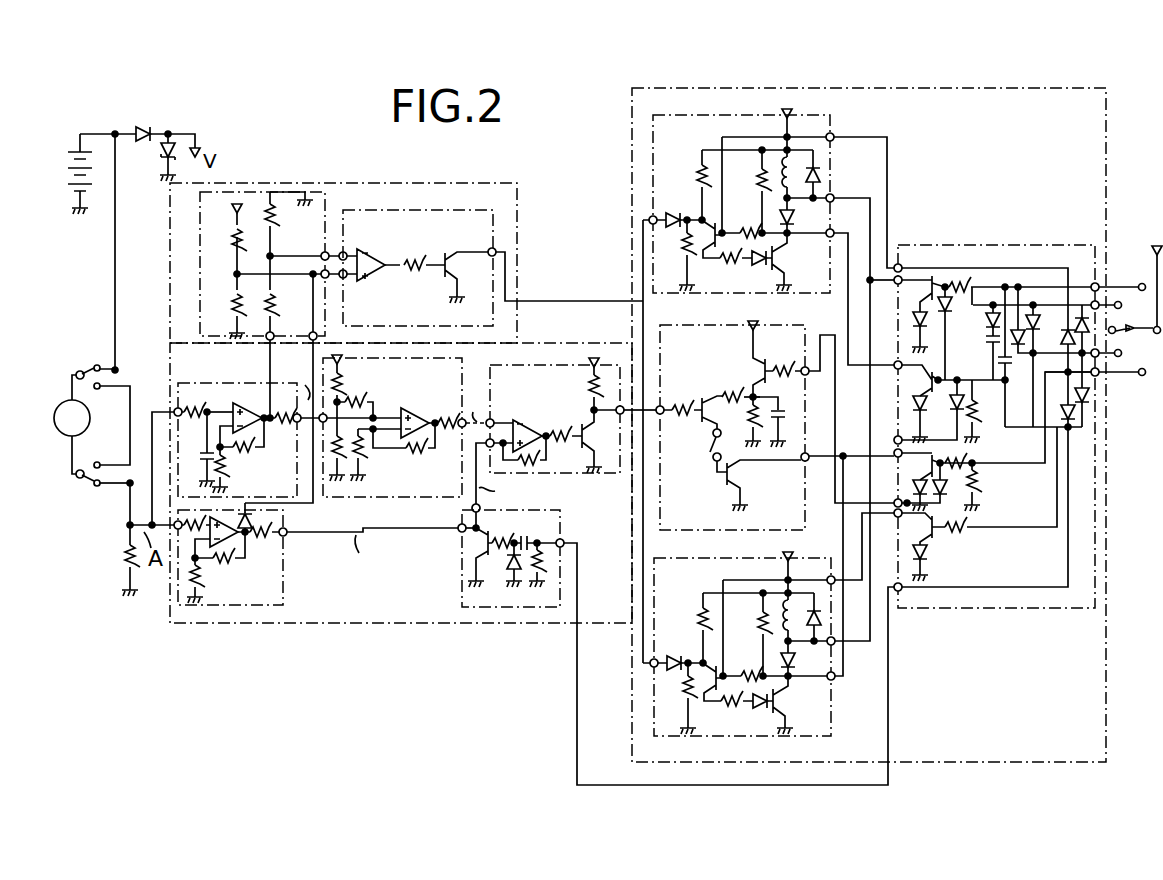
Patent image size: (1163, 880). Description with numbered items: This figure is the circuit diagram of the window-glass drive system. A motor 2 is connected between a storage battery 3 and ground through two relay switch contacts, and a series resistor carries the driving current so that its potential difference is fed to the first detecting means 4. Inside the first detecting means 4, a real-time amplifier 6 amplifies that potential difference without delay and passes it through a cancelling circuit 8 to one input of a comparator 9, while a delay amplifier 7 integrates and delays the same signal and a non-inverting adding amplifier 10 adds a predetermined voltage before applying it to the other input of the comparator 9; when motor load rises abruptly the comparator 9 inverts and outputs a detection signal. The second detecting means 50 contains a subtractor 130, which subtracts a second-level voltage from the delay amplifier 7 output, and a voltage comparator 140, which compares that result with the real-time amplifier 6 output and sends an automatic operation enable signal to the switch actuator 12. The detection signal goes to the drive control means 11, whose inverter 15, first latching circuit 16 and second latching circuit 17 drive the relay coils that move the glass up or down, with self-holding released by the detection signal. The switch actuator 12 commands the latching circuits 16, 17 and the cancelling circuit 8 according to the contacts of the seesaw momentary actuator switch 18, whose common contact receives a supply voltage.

The motor 2 is at (87, 422).
The storage battery 3 is at (77, 185).
The first detecting means 4 is at (347, 625).
The real-time amplifier 6 is at (284, 562).
The delay amplifier 7 is at (221, 386).
The cancelling circuit 8 is at (462, 585).
The comparator 9 is at (603, 474).
The non-inverting adding amplifier 10 is at (363, 502).
The drive control means 11 is at (1108, 705).
The switch actuator 12 is at (1027, 245).
The inverter 15 is at (746, 417).
The first latching circuit 16 is at (833, 123).
The second latching circuit 17 is at (765, 638).
The actuator switch 18 is at (1132, 237).
The second detecting means 50 is at (518, 211).
The subtractor 130 is at (200, 263).
The voltage comparator 140 is at (415, 207).